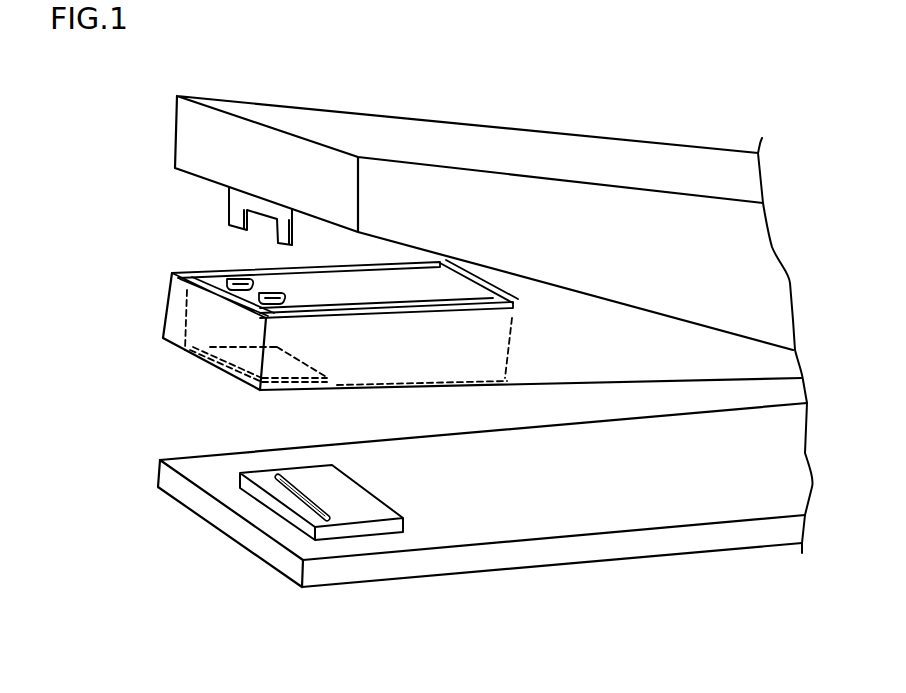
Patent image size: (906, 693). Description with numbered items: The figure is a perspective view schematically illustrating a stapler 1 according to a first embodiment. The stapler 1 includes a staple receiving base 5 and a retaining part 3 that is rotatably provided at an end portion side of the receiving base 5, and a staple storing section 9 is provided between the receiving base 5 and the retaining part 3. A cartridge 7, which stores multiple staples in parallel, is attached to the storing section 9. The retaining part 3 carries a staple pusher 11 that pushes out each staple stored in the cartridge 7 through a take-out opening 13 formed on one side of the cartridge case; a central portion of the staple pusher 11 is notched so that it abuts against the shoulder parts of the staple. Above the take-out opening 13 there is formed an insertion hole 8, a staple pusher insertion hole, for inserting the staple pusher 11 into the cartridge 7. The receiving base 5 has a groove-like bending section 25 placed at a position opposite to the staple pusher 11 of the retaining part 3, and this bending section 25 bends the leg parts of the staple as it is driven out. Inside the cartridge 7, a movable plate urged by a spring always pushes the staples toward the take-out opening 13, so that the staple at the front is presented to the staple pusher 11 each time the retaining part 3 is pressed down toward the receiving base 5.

The stapler 1 is at (108, 426).
The retaining part 3 is at (192, 135).
The staple receiving base 5 is at (262, 553).
The cartridge 7 is at (172, 305).
The insertion hole 8 is at (278, 293).
The staple storing section 9 is at (189, 361).
The staple pusher 11 is at (238, 214).
The take-out opening 13 is at (233, 373).
The groove-like bending section 25 is at (328, 503).